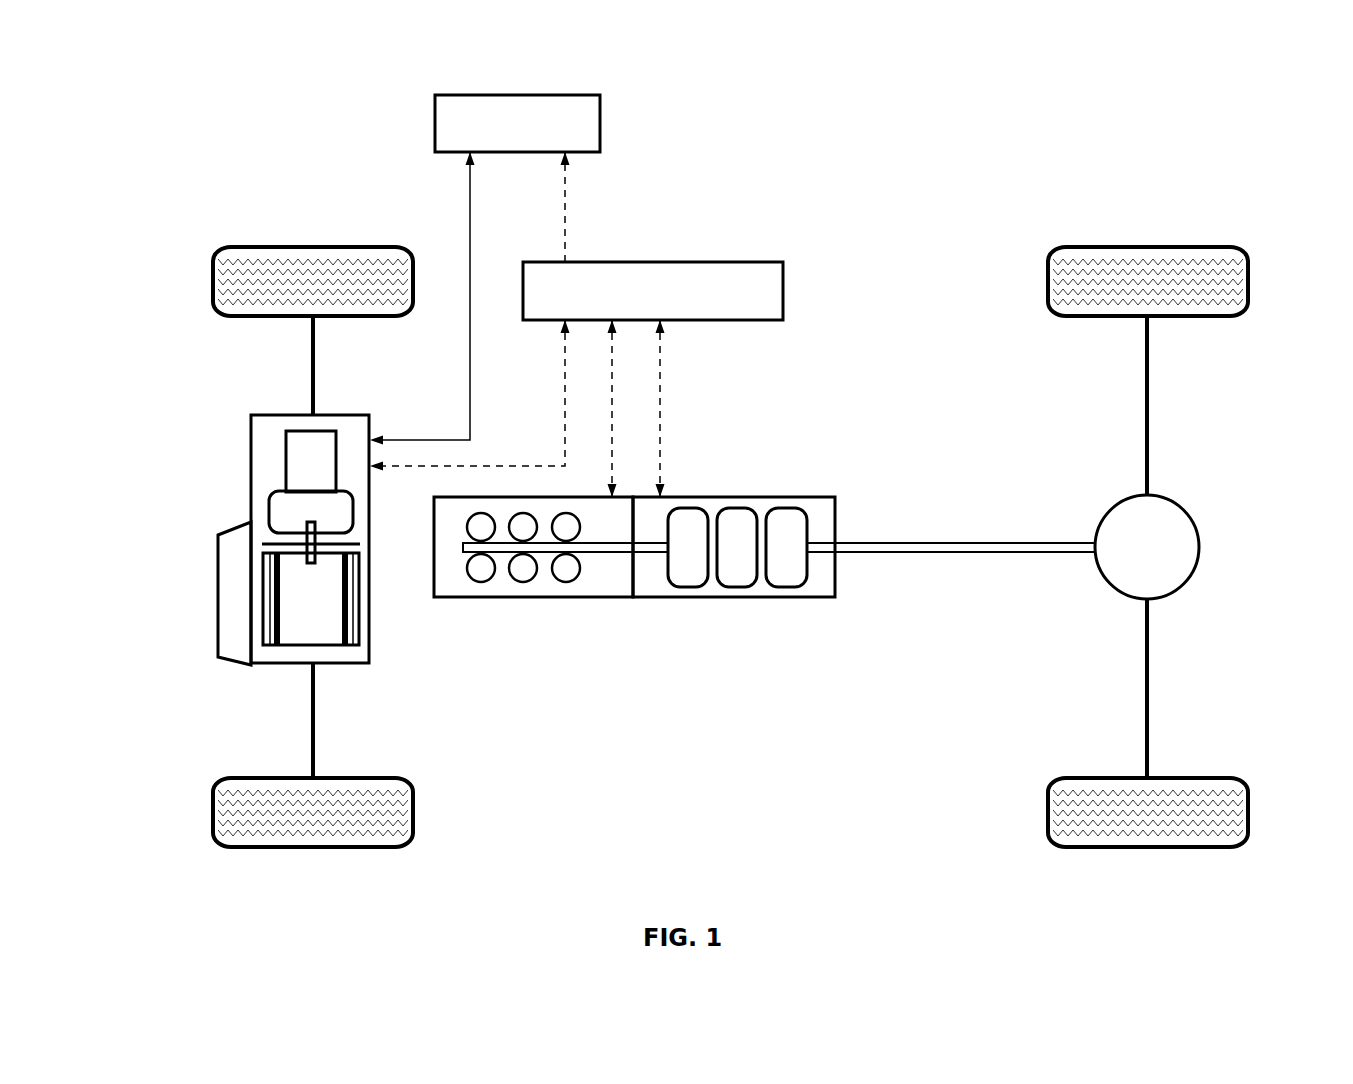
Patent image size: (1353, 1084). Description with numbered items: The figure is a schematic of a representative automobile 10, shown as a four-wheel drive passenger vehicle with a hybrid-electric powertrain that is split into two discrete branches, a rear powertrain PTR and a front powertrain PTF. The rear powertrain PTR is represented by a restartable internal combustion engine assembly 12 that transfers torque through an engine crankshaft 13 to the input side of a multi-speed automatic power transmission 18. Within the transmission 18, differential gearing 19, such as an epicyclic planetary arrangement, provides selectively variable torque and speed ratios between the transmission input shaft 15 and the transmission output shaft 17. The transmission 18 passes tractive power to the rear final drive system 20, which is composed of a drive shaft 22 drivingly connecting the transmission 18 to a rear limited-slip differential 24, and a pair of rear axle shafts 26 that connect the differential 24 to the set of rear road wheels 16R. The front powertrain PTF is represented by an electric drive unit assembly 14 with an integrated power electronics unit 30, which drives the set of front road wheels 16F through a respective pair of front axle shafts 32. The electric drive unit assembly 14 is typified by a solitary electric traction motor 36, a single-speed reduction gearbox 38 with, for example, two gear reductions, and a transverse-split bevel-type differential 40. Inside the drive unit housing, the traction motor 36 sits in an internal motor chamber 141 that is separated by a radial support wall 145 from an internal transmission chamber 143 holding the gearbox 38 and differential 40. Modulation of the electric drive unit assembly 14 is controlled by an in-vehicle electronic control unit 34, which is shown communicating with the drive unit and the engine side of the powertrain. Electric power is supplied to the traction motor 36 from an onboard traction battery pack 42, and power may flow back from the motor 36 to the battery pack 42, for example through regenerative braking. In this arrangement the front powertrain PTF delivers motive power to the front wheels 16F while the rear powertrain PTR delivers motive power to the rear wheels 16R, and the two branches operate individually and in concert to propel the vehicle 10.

The automobile 10 is at (190, 92).
The internal combustion engine assembly 12 is at (514, 597).
The engine crankshaft 13 is at (607, 555).
The electric drive unit assembly 14 is at (251, 486).
The transmission input shaft 15 is at (655, 555).
The front road wheels 16F is at (240, 247).
The rear road wheels 16R is at (1080, 248).
The transmission output shaft 17 is at (815, 558).
The multi-speed automatic power transmission 18 is at (740, 497).
The differential gearing 19 is at (708, 605).
The rear final drive system 20 is at (1210, 505).
The drive shaft 22 is at (1033, 542).
The rear limited-slip differential 24 is at (1178, 590).
The rear axle shafts 26 is at (1146, 343).
The integrated power electronics unit 30 is at (218, 608).
The front axle shafts 32 is at (312, 343).
The electronic control unit 34 is at (757, 262).
The electric traction motor 36 is at (263, 570).
The single-speed reduction gearbox 38 is at (286, 458).
The transverse-split bevel-type differential 40 is at (270, 497).
The onboard traction battery pack 42 is at (435, 100).
The internal motor chamber 141 is at (268, 655).
The internal transmission chamber 143 is at (268, 428).
The radial support wall 145 is at (268, 543).
The front powertrain PTF is at (392, 642).
The rear powertrain PTR is at (870, 642).